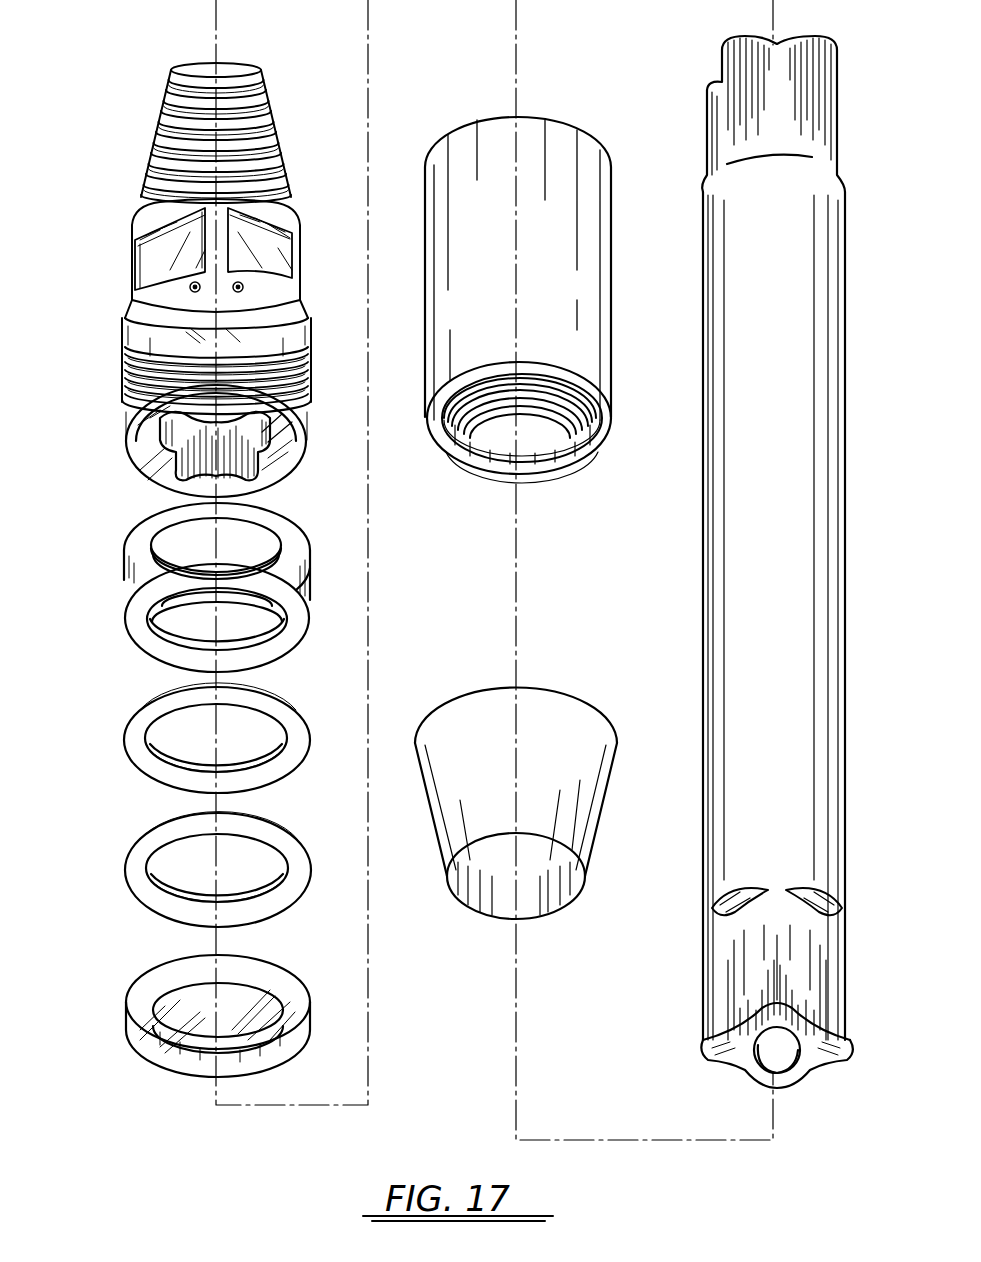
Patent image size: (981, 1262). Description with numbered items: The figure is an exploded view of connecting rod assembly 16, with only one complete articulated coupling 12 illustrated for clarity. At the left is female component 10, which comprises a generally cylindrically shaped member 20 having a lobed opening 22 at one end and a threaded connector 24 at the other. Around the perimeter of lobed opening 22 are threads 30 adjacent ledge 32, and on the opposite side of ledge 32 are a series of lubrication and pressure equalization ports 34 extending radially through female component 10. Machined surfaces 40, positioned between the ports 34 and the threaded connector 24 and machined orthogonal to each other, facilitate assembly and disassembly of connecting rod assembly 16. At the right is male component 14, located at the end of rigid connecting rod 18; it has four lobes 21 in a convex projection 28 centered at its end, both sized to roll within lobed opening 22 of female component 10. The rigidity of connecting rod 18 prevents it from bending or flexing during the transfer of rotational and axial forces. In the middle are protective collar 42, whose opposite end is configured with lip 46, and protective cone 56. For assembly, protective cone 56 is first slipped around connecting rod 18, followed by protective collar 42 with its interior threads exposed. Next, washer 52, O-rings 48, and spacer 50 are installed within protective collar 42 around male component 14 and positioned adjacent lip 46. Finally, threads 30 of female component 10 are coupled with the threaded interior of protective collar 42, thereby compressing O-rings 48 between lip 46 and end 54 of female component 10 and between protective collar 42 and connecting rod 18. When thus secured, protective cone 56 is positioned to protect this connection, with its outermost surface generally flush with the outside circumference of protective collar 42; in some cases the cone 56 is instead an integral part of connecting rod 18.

The female component 10 is at (125, 237).
The articulated coupling 12 is at (102, 806).
The male component 14 is at (840, 68).
The connecting rod assembly 16 is at (455, 582).
The connecting rod 18 is at (702, 516).
The cylindrically shaped member 20 is at (132, 310).
The lobes 21 is at (708, 84).
The lobed opening 22 is at (142, 458).
The threaded connector 24 is at (160, 130).
The convex projection 28 is at (800, 1068).
The threads 30 is at (132, 410).
The ledge 32 is at (128, 388).
The lubrication and pressure equalization ports 34 is at (188, 288).
The machined surfaces 40 is at (168, 260).
The protective collar 42 is at (525, 268).
The lip 46 is at (496, 450).
The O-rings 48 is at (126, 630).
The spacer 50 is at (126, 556).
The washer 52 is at (126, 1012).
The end 54 is at (284, 452).
The protective cone 56 is at (528, 775).